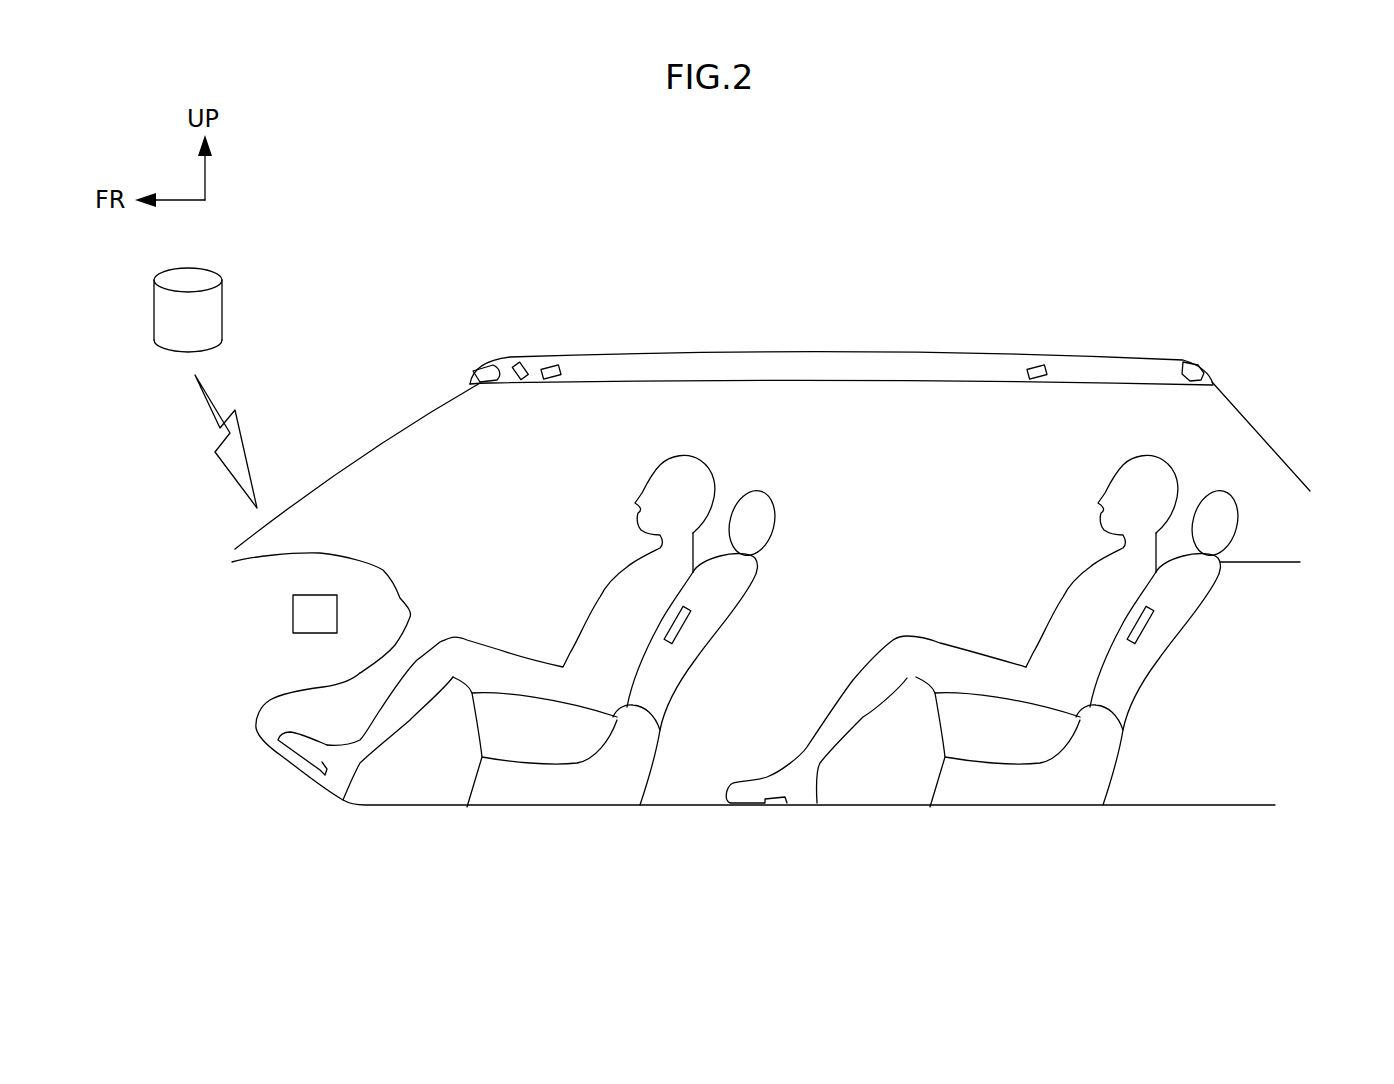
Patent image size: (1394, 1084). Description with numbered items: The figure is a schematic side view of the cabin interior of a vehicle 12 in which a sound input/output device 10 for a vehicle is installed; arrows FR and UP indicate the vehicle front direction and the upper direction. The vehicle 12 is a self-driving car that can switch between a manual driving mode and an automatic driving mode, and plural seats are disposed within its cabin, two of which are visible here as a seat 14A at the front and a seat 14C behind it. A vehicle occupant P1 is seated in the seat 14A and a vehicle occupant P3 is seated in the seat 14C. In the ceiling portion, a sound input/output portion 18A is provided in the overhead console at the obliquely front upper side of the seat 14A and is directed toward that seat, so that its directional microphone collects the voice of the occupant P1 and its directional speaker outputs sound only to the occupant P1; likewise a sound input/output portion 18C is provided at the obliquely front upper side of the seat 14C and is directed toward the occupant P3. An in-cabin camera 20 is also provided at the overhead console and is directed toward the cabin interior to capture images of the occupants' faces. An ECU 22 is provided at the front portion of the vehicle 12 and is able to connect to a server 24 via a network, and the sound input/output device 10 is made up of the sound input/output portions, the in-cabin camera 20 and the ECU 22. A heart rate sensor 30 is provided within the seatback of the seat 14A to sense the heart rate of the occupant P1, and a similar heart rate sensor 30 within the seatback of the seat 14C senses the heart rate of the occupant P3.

The sound input/output device for a vehicle 10 is at (420, 378).
The vehicle 12 is at (405, 280).
The seat 14A is at (770, 493).
The seat 14C is at (1227, 492).
The sound input/output portion 18A is at (552, 361).
The sound input/output portion 18C is at (1030, 363).
The in-cabin camera 20 is at (528, 357).
The ECU 22 is at (318, 595).
The server 24 is at (223, 302).
The heart rate sensor 30 is at (680, 630).
The vehicle occupant P1 is at (605, 587).
The vehicle occupant P3 is at (1057, 610).